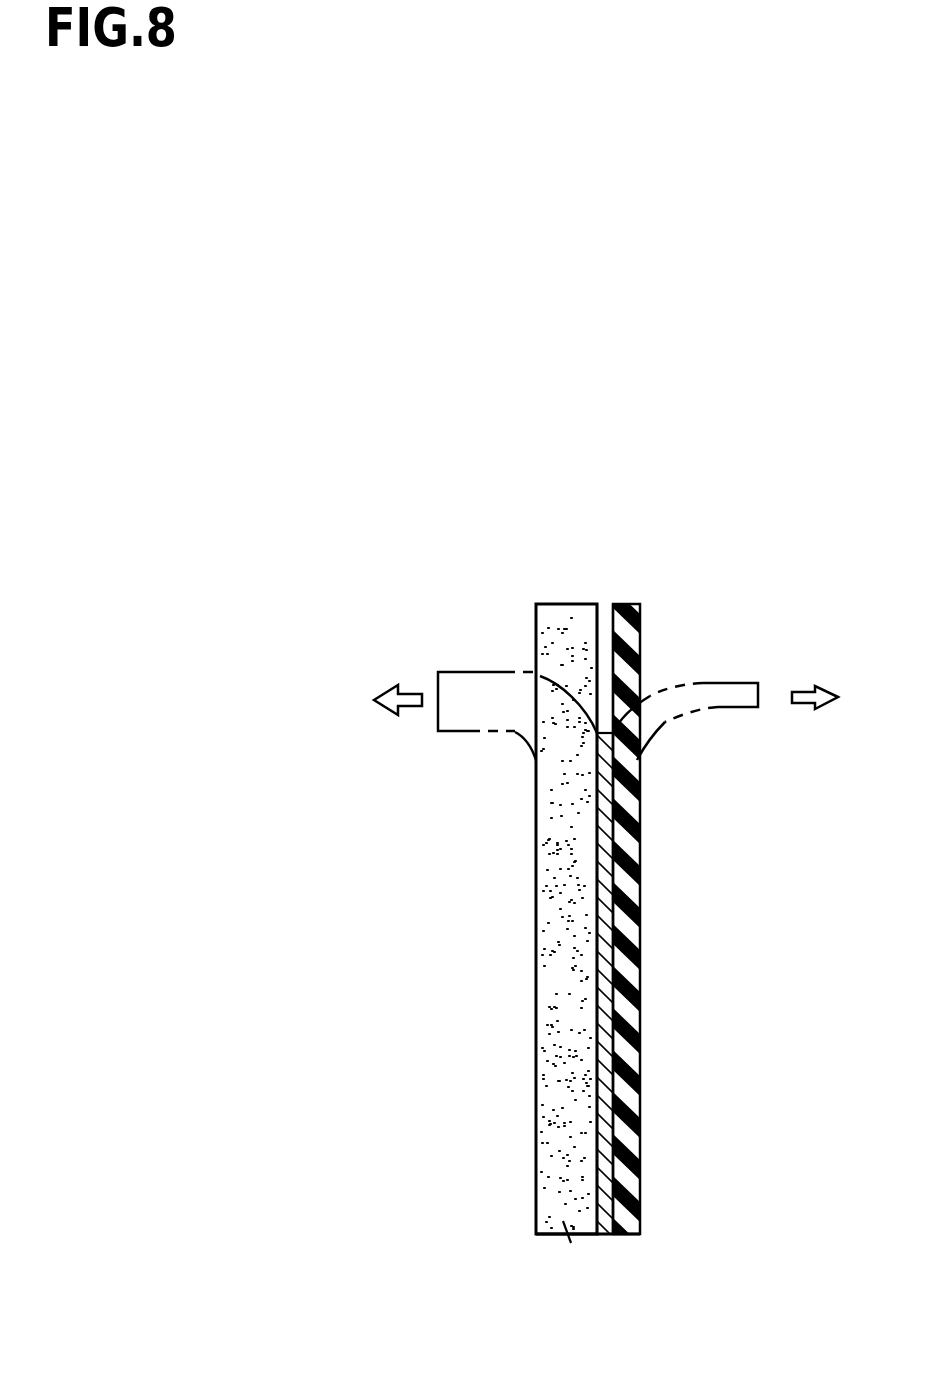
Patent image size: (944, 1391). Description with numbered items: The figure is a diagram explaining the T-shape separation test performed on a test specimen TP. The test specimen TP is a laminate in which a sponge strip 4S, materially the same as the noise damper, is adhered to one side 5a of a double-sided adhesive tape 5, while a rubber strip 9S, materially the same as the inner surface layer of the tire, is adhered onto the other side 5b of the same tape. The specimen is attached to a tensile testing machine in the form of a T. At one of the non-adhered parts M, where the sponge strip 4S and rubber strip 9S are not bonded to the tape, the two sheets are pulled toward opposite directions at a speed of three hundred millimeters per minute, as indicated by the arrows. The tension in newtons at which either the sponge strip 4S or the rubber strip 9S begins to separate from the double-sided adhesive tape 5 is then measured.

The sponge strip 4S is at (550, 915).
The rubber strip 9S is at (628, 948).
The one side of the double-sided adhesive tape 5a is at (603, 1110).
The other side of the double-sided adhesive tape 5b is at (610, 1132).
The double-sided adhesive tape 5 is at (603, 1234).
The non-adhered part M is at (608, 594).
The test specimen TP is at (430, 1000).